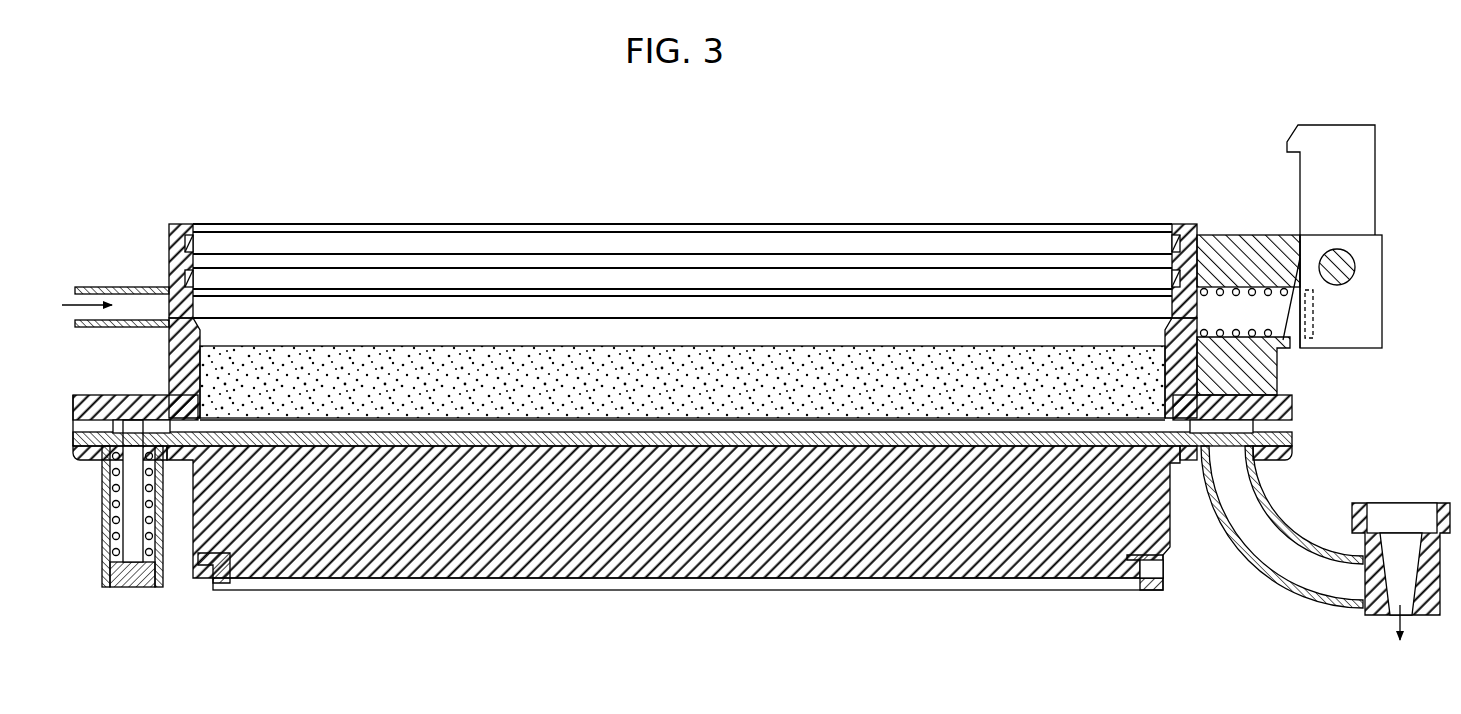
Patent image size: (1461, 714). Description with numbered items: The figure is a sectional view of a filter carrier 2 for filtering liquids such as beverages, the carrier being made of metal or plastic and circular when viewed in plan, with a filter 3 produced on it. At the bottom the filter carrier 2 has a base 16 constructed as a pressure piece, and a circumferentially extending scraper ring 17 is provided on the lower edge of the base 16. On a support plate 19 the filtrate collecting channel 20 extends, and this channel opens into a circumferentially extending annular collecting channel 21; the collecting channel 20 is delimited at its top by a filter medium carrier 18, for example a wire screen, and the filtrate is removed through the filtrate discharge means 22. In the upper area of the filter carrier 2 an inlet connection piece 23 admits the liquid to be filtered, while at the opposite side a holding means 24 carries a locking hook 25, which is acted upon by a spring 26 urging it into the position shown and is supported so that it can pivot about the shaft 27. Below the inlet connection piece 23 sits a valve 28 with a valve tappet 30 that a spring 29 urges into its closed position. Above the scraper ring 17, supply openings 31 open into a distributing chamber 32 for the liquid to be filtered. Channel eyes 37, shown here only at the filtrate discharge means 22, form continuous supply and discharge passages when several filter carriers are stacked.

The filter carrier 2 is at (1014, 206).
The filter 3 is at (720, 360).
The base 16 is at (1053, 533).
The scraper ring 17 is at (1140, 593).
The filter medium carrier 18 is at (890, 380).
The support plate 19 is at (907, 432).
The filtrate collecting channel 20 is at (990, 425).
The annular collecting channel 21 is at (148, 425).
The filtrate discharge means 22 is at (1275, 545).
The inlet connection piece 23 is at (133, 298).
The holding means 24 is at (1240, 252).
The locking hook 25 is at (1357, 172).
The spring 26 is at (1278, 372).
The shaft 27 is at (1356, 268).
The valve 28 is at (95, 540).
The spring 29 is at (165, 552).
The valve tappet 30 is at (133, 443).
The supply openings 31 is at (193, 568).
The distributing chamber 32 is at (790, 592).
The channel eyes 37 is at (1446, 505).